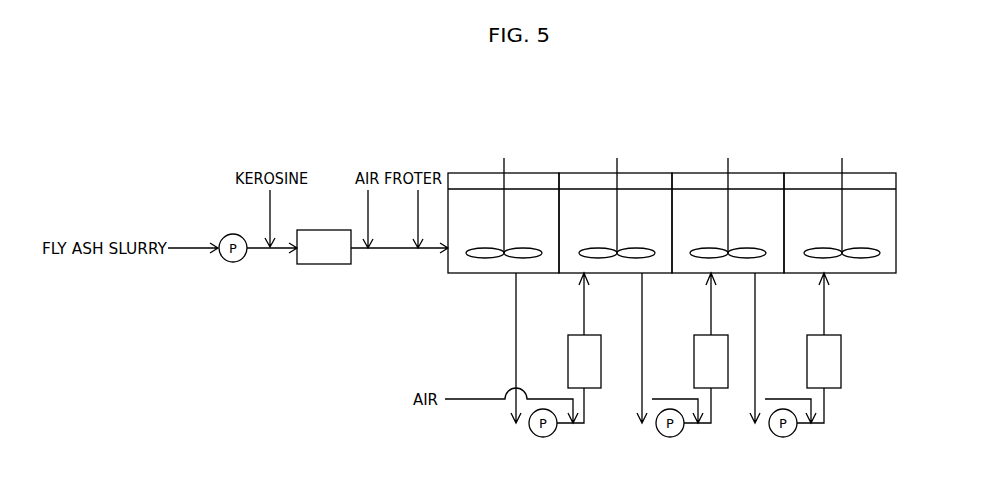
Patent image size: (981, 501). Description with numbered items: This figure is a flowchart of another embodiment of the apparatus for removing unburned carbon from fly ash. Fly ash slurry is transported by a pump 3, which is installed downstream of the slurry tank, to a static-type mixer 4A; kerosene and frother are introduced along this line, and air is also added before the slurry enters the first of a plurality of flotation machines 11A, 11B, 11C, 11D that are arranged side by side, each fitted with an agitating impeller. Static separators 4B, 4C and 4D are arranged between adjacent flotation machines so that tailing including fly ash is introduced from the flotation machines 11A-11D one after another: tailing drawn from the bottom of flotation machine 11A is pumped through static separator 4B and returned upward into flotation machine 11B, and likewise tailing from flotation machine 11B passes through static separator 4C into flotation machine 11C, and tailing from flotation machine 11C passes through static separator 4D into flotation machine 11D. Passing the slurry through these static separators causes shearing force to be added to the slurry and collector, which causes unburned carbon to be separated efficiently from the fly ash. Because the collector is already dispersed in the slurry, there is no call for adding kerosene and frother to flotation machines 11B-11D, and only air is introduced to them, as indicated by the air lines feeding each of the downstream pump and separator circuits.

The pump 3 is at (233, 262).
The static-type mixer 4A is at (323, 264).
The static separator 4B is at (568, 360).
The static separator 4C is at (694, 360).
The static separator 4D is at (807, 360).
The flotation machine 11A is at (480, 173).
The flotation machine 11B is at (593, 173).
The flotation machine 11C is at (708, 173).
The flotation machine 11D is at (822, 173).